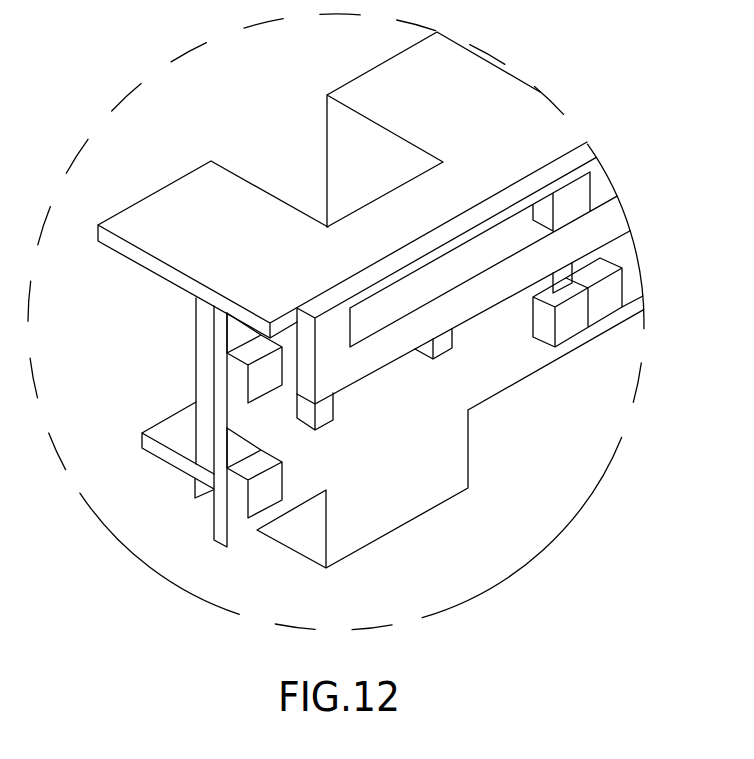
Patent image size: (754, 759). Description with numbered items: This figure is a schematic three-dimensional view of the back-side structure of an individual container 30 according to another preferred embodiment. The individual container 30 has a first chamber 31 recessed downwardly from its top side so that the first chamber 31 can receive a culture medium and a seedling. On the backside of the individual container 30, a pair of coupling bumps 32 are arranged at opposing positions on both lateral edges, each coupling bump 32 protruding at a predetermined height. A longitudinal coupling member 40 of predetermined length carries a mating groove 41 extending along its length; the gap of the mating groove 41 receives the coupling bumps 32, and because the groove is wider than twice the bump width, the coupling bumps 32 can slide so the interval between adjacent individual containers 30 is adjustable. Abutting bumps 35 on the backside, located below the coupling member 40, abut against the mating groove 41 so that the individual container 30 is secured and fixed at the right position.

The individual container 30 is at (173, 245).
The first chamber 31 is at (273, 158).
The coupling bump 32 is at (240, 490).
The abutting bump 35 is at (320, 412).
The coupling member 40 is at (612, 218).
The mating groove 41 is at (438, 263).